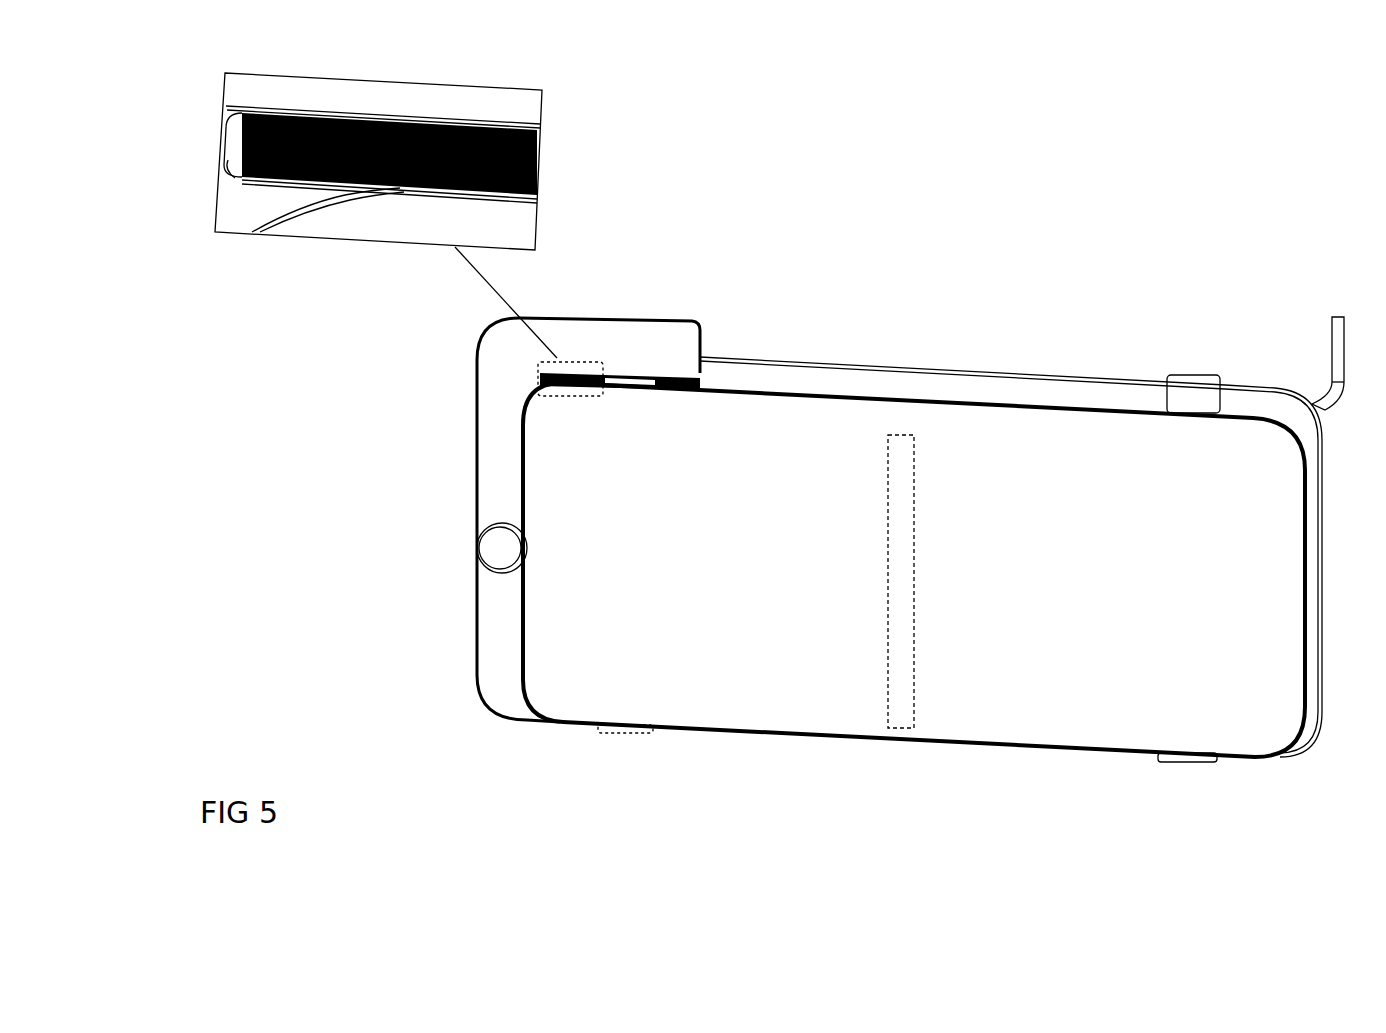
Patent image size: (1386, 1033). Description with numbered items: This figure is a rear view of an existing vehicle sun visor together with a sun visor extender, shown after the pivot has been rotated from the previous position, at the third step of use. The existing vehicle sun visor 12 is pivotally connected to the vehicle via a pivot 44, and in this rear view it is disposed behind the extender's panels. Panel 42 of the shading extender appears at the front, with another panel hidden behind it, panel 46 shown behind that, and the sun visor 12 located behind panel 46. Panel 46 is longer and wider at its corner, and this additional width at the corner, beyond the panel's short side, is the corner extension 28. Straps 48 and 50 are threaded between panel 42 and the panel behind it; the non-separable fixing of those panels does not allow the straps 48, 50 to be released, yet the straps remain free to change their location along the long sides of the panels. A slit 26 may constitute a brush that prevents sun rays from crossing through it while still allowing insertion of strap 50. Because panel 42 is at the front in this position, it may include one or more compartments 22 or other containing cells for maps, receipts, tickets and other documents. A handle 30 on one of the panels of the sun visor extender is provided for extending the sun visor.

The existing vehicle sun visor 12 is at (1258, 400).
The compartment 22 is at (900, 505).
The slit 26 is at (540, 140).
The additional width at the corner 28 is at (670, 340).
The handle 30 is at (502, 548).
The panel 42 is at (732, 650).
The pivot 44 is at (1338, 348).
The panel 46 is at (497, 478).
The strap 48 is at (1193, 393).
The strap 50 is at (632, 375).